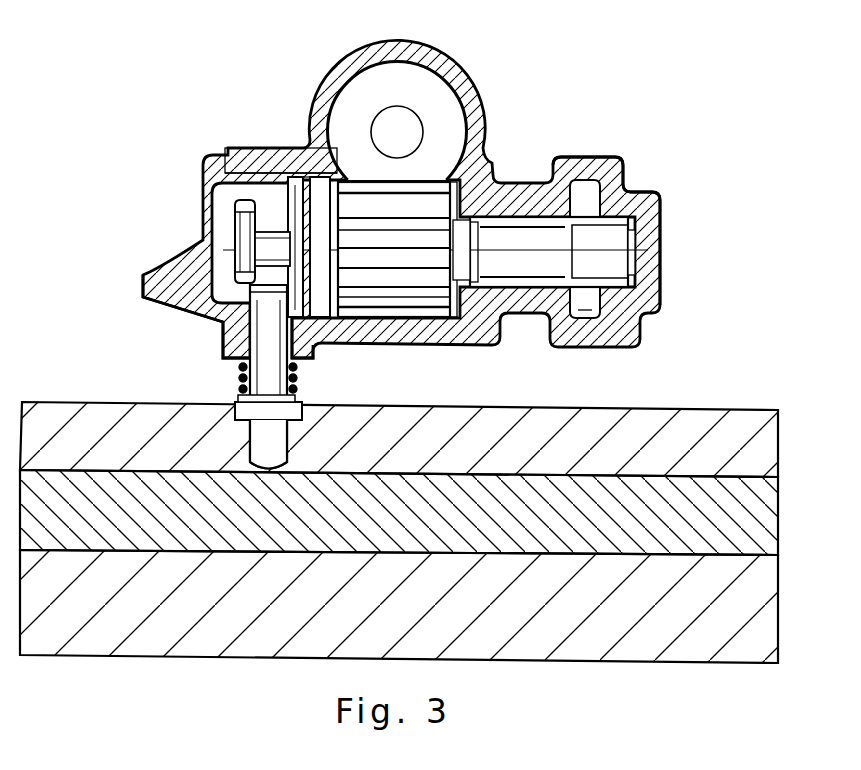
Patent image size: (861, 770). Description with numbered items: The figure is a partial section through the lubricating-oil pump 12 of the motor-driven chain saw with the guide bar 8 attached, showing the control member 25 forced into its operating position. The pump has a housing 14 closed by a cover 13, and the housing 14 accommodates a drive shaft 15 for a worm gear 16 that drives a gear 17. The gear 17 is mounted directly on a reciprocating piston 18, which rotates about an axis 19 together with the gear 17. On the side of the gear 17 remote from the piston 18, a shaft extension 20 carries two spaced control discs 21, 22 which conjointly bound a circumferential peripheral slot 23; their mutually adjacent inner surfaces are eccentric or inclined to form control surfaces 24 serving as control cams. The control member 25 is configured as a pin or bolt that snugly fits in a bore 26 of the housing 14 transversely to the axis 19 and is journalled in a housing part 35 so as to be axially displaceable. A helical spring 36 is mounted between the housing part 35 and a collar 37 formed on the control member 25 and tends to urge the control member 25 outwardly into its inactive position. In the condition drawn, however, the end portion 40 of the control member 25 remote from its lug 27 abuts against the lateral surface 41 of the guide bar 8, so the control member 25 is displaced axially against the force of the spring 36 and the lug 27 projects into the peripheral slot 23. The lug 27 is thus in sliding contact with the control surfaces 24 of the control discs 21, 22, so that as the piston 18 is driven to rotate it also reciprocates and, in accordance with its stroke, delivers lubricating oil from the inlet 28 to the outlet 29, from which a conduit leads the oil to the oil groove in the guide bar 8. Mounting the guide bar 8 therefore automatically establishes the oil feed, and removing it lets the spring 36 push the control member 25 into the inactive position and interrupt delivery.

The guide bar 8 is at (399, 515).
The lubricating-oil pump 12 is at (401, 234).
The cover 13 is at (208, 160).
The housing 14 is at (492, 157).
The drive shaft 15 is at (402, 110).
The ring eye 16 is at (443, 92).
The gear 17 is at (420, 307).
The reciprocating piston 18 is at (538, 228).
The axis 19 is at (494, 253).
The shaft extension 20 is at (250, 242).
The control disc 21 is at (236, 212).
The control disc 22 is at (327, 297).
The peripheral slot 23 is at (283, 200).
The control surfaces 24 is at (243, 148).
The control member 25 is at (281, 338).
The bore 26 is at (257, 345).
The lug 27 is at (255, 295).
The inlet 28 is at (583, 312).
The outlet 29 is at (593, 193).
The housing part 35 is at (307, 352).
The spring 36 is at (296, 378).
The collar 37 is at (240, 398).
The end portion 40 is at (274, 455).
The lateral surface 41 is at (375, 471).